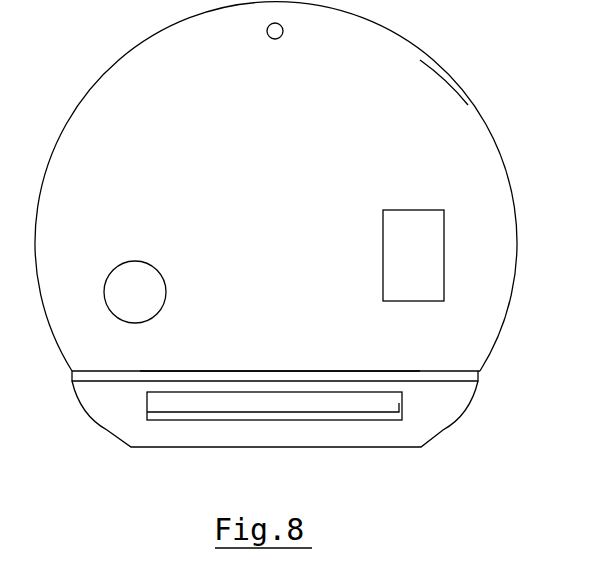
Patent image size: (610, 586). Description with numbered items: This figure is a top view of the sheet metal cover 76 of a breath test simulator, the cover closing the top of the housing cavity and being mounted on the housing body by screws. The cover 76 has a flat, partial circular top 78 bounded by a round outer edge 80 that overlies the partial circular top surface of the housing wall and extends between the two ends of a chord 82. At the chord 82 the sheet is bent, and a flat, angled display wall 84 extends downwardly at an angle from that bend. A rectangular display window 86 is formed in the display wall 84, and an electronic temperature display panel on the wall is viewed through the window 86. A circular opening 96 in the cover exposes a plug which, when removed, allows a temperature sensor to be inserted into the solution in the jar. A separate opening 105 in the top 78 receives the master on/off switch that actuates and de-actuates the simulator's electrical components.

The sheet metal cover 76 is at (110, 69).
The top 78 is at (407, 72).
The round outer edge 80 is at (468, 106).
The chord 82 is at (208, 371).
The angled display wall 84 is at (111, 407).
The rectangular display window 86 is at (397, 403).
The circular opening 96 is at (120, 263).
The opening 105 is at (396, 213).